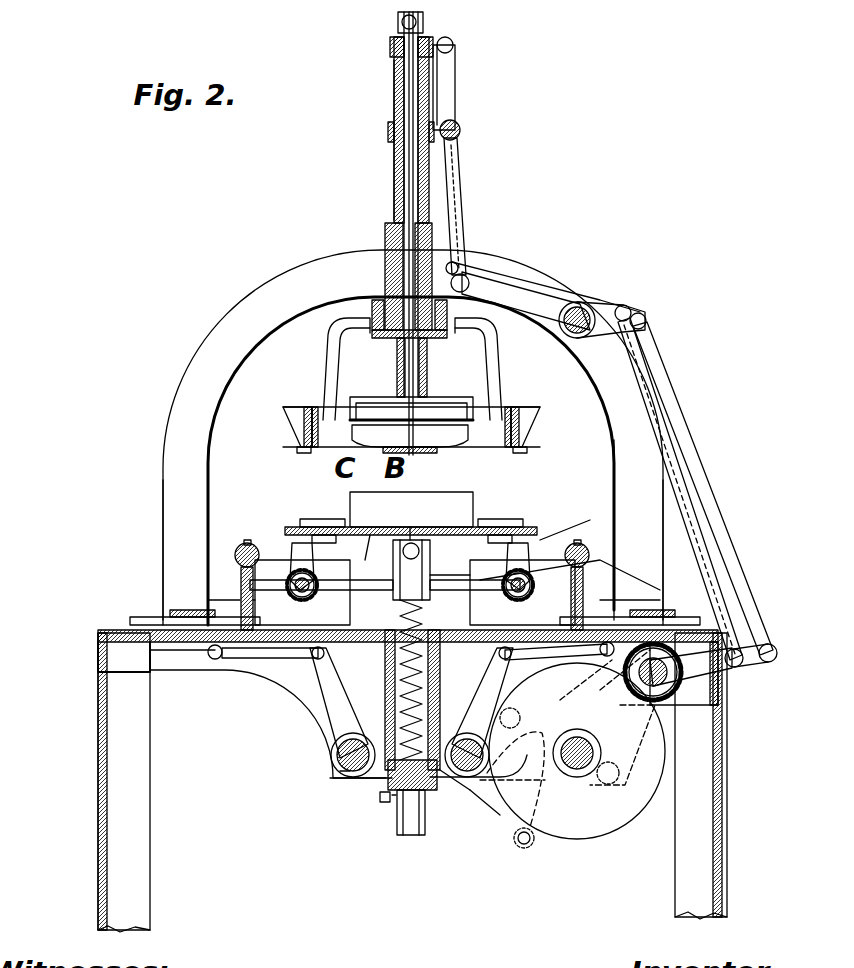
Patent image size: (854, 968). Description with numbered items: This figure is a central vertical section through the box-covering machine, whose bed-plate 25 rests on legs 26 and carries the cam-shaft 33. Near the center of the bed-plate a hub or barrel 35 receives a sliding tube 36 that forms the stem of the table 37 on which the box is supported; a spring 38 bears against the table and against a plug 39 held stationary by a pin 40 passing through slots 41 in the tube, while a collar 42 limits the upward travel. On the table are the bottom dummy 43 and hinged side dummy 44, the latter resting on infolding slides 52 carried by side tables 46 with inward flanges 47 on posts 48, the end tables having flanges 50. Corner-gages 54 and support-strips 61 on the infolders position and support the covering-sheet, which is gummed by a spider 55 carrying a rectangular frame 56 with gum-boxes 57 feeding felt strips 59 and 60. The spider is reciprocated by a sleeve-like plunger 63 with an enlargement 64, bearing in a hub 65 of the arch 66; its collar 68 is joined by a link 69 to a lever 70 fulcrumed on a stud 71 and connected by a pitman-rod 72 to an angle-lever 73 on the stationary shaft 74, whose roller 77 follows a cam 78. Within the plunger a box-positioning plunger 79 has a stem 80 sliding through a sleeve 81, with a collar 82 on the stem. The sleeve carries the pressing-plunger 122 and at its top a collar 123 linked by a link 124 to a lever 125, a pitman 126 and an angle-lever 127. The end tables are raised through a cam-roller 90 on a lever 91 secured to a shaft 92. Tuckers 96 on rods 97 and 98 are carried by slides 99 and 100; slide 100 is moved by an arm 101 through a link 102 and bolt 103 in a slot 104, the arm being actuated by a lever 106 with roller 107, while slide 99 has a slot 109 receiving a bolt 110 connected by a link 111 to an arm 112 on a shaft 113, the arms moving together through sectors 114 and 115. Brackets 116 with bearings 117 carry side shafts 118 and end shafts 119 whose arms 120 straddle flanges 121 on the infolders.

The bed-plate 25 is at (98, 655).
The legs 26 is at (100, 752).
The cam-shaft 33 is at (575, 772).
The hub or barrel 35 is at (448, 780).
The tube 36 is at (385, 700).
The table 37 is at (411, 513).
The spring 38 is at (388, 775).
The plug 39 is at (395, 800).
The pin 40 is at (392, 790).
The slots 41 is at (425, 712).
The collar 42 is at (424, 835).
The bottom dummy 43 is at (405, 516).
The side dummy 44 is at (320, 520).
The side tables 46 is at (320, 535).
The flange 47 is at (370, 545).
The posts 48 is at (330, 605).
The flanges 50 is at (372, 526).
The slides 52 is at (275, 548).
The corner-gages 54 is at (545, 512).
The spider 55 is at (500, 364).
The rectangular frame 56 is at (312, 410).
The gum-boxes 57 is at (295, 422).
The felt strips 59 is at (297, 450).
The felt strips 60 is at (425, 447).
The support-strips 61 is at (300, 542).
The plunger 63 is at (394, 186).
The enlargement 64 is at (385, 336).
The hub 65 is at (379, 267).
The arch 66 is at (413, 437).
The collar 68 is at (388, 132).
The link 69 is at (460, 182).
The lever 70 is at (525, 298).
The stud 71 is at (582, 306).
The pitman-rod 72 is at (675, 470).
The angle-lever 73 is at (715, 690).
The shaft 74 is at (665, 690).
The roller 77 is at (629, 714).
The cam 78 is at (640, 820).
The plunger 79 is at (470, 442).
The stem 80 is at (414, 372).
The sleeve 81 is at (394, 158).
The collar 82 is at (424, 26).
The cam-roller 90 is at (530, 848).
The lever 91 is at (518, 845).
The shaft 92 is at (567, 745).
The tuckers 96 is at (244, 545).
The rod 97 is at (660, 560).
The rod 98 is at (242, 560).
The slide 99 is at (240, 615).
The slide 100 is at (655, 618).
The arm 101 is at (500, 660).
The link 102 is at (560, 660).
The bolt 103 is at (606, 680).
The slot 104 is at (655, 612).
The lever 106 is at (520, 779).
The roller 107 is at (520, 718).
The slot 109 is at (240, 548).
The bolt 110 is at (213, 660).
The link 111 is at (238, 658).
The arm 112 is at (326, 670).
The shaft 113 is at (345, 771).
The sector 114 is at (330, 778).
The sector 115 is at (500, 812).
The brackets 116 is at (298, 682).
The bearings 117 is at (486, 590).
The side shafts 118 is at (301, 595).
The end shafts 119 is at (454, 563).
The arms 120 is at (185, 534).
The flanges 121 is at (540, 540).
The pressing-plunger 122 is at (450, 408).
The collar 123 is at (390, 47).
The link 124 is at (455, 88).
The lever 125 is at (490, 280).
The pitman 126 is at (680, 384).
The angle-lever 127 is at (752, 660).